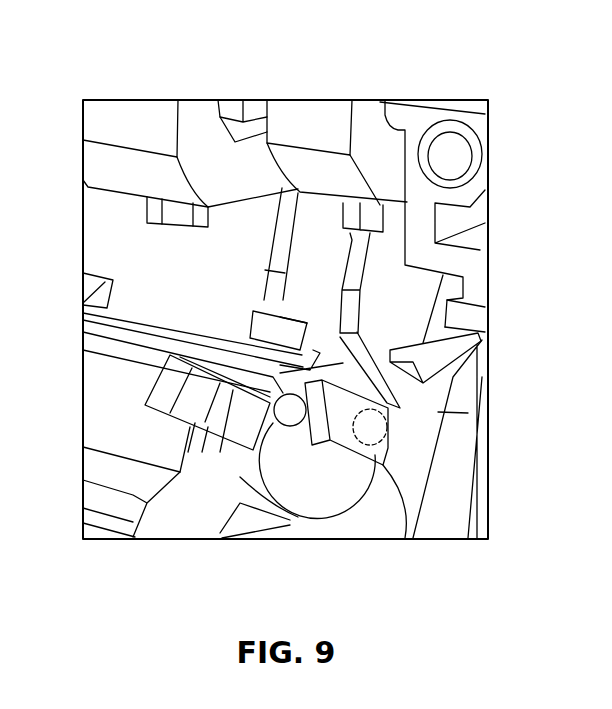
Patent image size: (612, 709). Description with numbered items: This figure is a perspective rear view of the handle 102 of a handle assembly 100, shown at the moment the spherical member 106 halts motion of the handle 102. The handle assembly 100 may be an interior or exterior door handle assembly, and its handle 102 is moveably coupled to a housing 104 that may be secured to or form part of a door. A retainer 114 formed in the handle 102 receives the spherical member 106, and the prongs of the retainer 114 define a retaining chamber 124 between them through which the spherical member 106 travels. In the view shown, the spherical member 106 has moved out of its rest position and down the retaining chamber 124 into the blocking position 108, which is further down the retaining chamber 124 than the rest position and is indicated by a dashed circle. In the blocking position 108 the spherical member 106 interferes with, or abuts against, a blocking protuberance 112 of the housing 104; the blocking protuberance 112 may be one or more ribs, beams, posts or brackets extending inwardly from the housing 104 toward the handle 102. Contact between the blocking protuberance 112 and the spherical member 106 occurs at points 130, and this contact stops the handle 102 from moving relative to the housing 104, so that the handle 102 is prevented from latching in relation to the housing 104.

The handle assembly 100 is at (138, 78).
The handle 102 is at (432, 507).
The housing 104 is at (442, 147).
The spherical member 106 is at (277, 468).
The blocking position 108 is at (350, 507).
The blocking protuberance 112 is at (380, 275).
The retainer 114 is at (405, 539).
The retaining chamber 124 is at (258, 452).
The points 130 is at (286, 405).